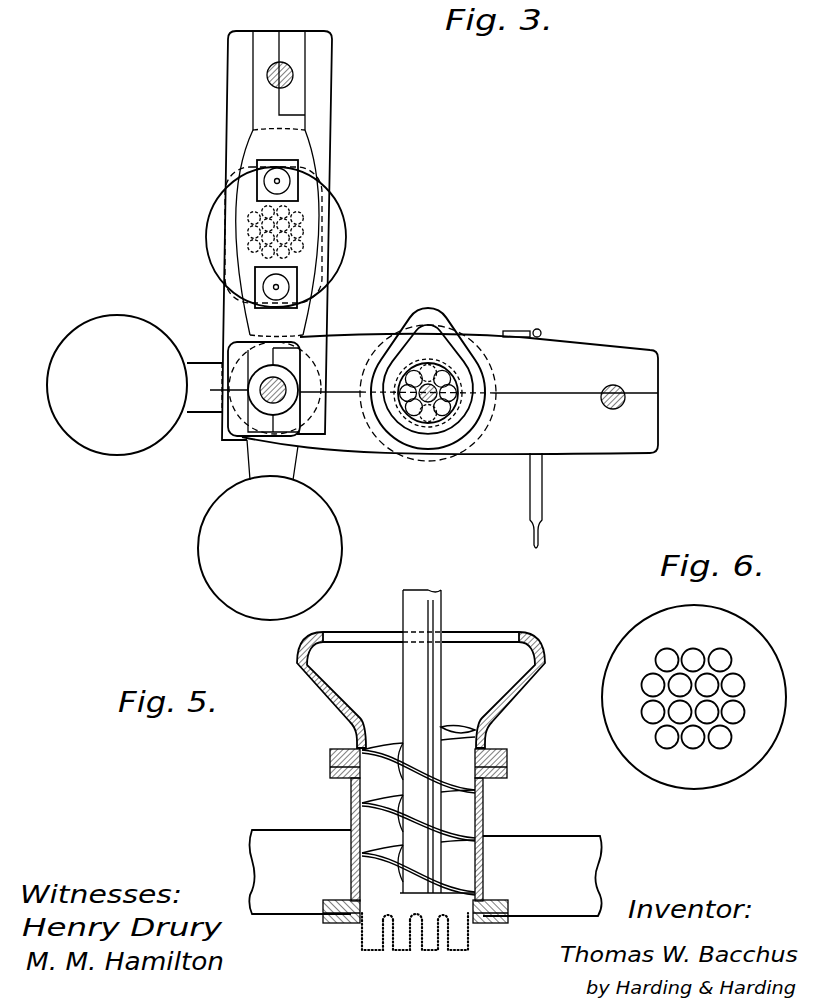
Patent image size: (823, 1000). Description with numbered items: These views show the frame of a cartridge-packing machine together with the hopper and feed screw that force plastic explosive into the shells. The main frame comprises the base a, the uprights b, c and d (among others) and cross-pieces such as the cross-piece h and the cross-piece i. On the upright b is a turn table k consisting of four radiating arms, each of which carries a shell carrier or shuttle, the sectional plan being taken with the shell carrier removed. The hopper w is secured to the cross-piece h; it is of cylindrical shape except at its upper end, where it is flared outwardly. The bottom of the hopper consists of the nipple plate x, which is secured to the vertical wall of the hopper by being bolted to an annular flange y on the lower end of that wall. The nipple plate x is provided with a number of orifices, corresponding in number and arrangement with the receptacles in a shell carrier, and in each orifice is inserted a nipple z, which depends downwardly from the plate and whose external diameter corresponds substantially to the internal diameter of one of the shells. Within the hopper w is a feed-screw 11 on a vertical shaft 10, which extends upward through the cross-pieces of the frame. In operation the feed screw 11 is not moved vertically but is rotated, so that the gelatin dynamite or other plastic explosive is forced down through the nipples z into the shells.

In FIG. 3, the base a is at (328, 118).
In FIG. 3, the upright d is at (293, 76).
In FIG. 3, the cross-piece i is at (253, 153).
In FIG. 3, the turn table k is at (204, 368).
In FIG. 3, the upright b is at (267, 398).
In FIG. 3, the cross-piece h is at (568, 353).
In FIG. 5, the cross-piece h is at (527, 847).
In FIG. 3, the hopper w is at (434, 340).
In FIG. 5, the hopper w is at (500, 692).
In FIG. 3, the upright c is at (625, 400).
In FIG. 5, the vertical shaft 10 is at (422, 612).
In FIG. 5, the feed-screw 11 is at (448, 788).
In FIG. 5, the annular flange y is at (487, 907).
In FIG. 5, the nipple plate x is at (502, 923).
In FIG. 5, the nipple z is at (458, 942).